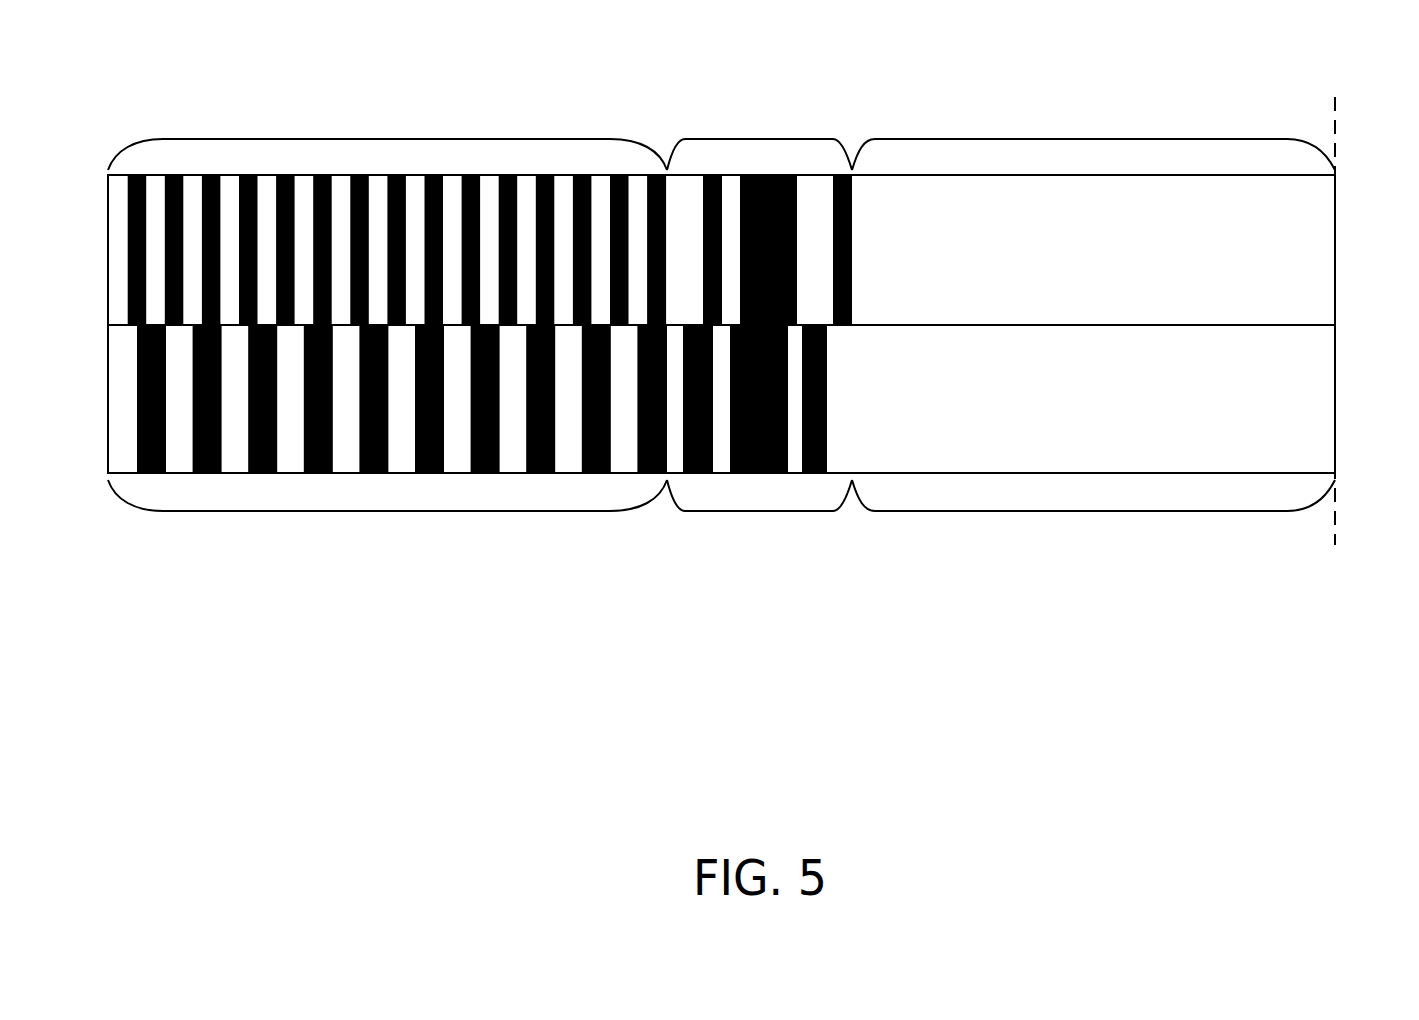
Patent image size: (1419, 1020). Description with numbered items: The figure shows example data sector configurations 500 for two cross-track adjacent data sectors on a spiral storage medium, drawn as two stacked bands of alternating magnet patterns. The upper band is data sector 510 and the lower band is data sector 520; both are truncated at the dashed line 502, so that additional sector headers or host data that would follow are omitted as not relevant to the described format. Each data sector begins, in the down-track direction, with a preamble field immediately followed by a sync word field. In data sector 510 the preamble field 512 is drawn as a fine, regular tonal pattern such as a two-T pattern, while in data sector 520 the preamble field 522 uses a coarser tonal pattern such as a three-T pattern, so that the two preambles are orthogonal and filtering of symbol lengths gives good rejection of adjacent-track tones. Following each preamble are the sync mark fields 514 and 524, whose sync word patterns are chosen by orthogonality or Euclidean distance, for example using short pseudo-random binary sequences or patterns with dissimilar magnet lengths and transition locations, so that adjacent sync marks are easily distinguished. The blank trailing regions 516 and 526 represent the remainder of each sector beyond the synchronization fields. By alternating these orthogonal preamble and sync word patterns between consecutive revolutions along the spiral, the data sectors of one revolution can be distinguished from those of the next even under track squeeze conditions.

The data sector configurations 500 is at (1306, 753).
The line 502 is at (1335, 102).
The data sector 510 is at (108, 250).
The preamble field 512 is at (386, 139).
The sync mark field 514 is at (759, 139).
The third section of first row 516 is at (1094, 139).
The data sector 520 is at (108, 398).
The preamble field 522 is at (386, 511).
The sync mark field 524 is at (759, 511).
The third section of second row 526 is at (1094, 511).